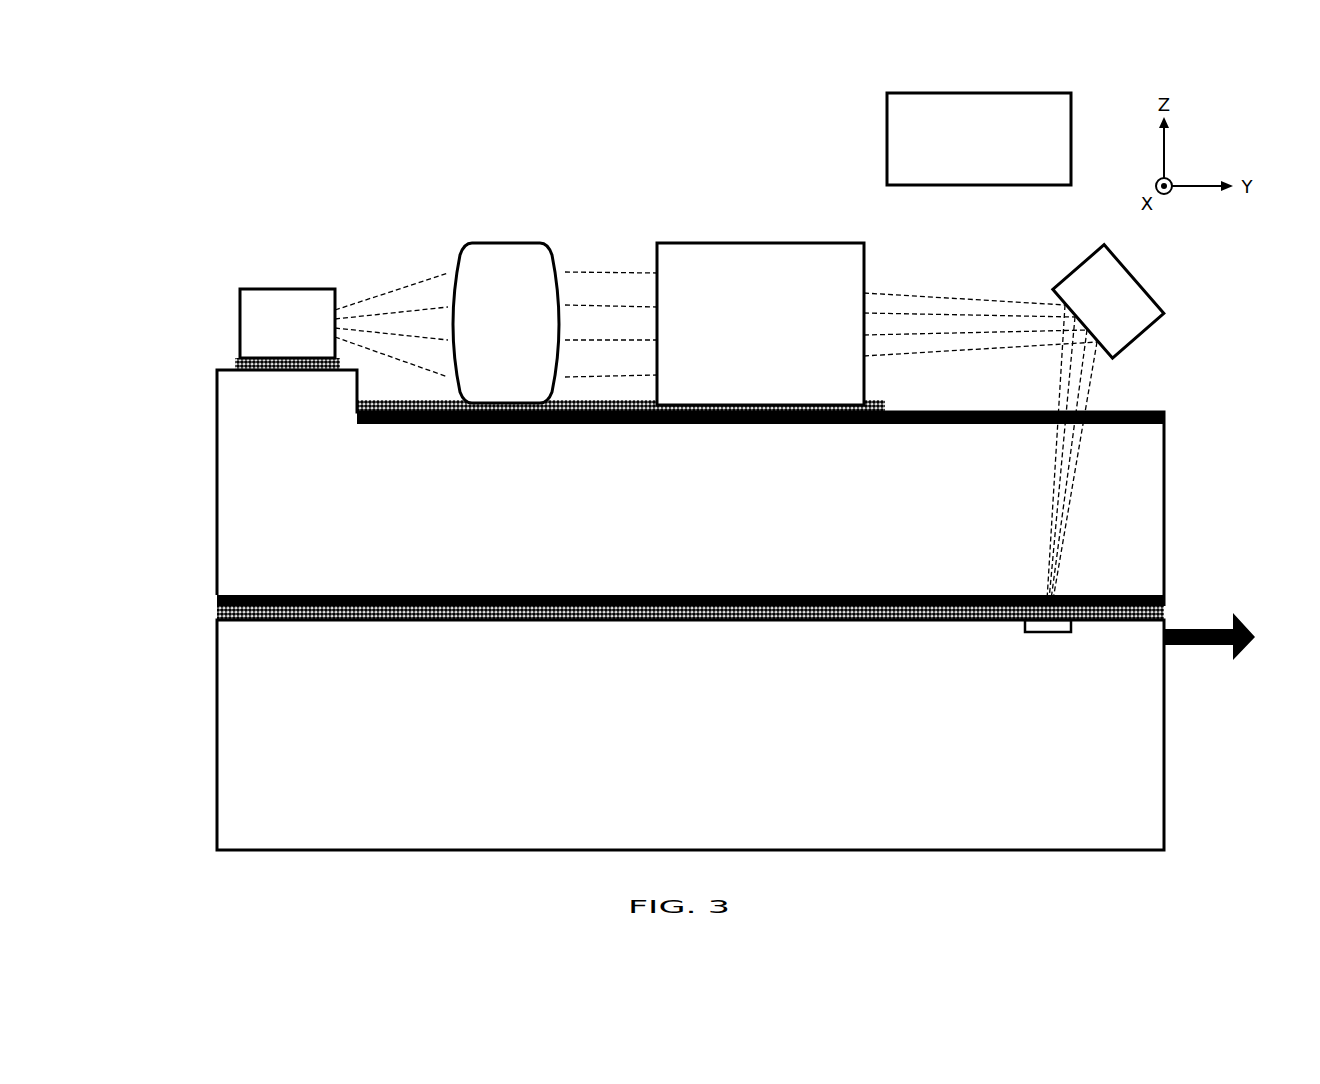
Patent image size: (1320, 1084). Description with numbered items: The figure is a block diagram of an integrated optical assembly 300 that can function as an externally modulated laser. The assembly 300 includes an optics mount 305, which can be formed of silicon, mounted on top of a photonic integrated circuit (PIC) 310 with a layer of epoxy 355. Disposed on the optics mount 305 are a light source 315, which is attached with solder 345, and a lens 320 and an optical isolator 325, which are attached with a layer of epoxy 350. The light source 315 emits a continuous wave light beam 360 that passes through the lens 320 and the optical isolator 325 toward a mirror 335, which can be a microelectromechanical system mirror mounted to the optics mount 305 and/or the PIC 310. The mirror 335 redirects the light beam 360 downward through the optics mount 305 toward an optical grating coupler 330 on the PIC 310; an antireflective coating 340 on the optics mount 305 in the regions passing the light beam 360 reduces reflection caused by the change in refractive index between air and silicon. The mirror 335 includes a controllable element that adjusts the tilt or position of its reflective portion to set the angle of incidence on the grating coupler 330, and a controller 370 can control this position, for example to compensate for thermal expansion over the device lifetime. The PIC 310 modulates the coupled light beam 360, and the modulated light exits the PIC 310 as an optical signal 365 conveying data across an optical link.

The integrated optical assembly 300 is at (304, 134).
The optics mount 305 is at (690, 488).
The photonic integrated circuit 310 is at (690, 735).
The light source 315 is at (287, 323).
The lens 320 is at (506, 323).
The optical isolator 325 is at (760, 324).
The optical grating coupler 330 is at (1045, 634).
The mirror 335 is at (1108, 301).
The antireflective coating 340 is at (863, 418).
The solder 345 is at (237, 362).
The epoxy 350 is at (578, 403).
The epoxy 355 is at (795, 613).
The light beam 360 is at (378, 278).
The optical signal 365 is at (1208, 647).
The controller 370 is at (979, 139).